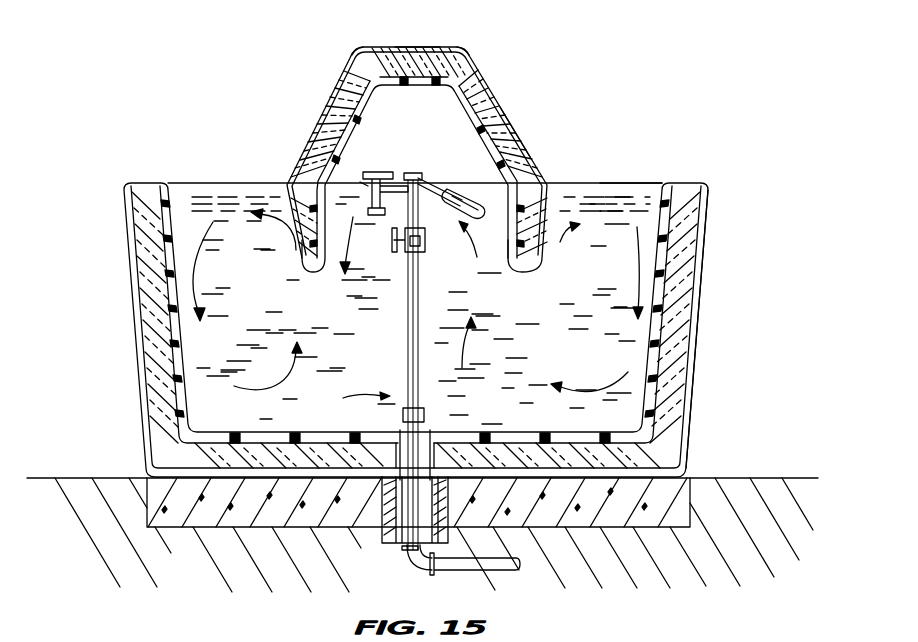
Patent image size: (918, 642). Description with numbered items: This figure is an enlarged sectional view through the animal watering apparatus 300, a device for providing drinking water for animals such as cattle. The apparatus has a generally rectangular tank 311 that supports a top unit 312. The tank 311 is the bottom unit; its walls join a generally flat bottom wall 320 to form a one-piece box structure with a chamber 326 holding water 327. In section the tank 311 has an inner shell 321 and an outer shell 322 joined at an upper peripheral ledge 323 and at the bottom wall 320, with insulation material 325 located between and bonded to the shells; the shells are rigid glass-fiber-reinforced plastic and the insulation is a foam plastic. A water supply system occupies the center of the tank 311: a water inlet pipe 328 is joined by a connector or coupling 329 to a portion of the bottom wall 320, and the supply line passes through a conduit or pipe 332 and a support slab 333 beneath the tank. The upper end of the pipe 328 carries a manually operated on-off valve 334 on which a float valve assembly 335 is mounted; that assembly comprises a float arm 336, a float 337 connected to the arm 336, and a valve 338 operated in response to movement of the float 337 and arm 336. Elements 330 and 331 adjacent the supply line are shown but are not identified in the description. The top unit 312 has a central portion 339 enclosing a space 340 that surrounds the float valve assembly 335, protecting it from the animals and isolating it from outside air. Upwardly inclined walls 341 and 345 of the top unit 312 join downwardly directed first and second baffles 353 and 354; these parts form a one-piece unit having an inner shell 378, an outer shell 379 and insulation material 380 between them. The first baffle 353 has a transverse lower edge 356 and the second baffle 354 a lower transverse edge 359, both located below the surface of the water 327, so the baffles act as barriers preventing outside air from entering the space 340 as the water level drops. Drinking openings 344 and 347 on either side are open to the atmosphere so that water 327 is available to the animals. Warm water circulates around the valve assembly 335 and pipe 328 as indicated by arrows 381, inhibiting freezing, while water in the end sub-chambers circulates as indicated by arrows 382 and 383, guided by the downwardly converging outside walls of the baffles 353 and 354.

The animal watering apparatus 300 is at (615, 71).
The tank 311 is at (698, 329).
The top unit 312 is at (402, 154).
The bottom wall 320 is at (392, 314).
The inner shell 321 is at (415, 303).
The outer shell 322 is at (128, 257).
The upper peripheral ledge 323 is at (143, 178).
The insulation material 325 is at (155, 287).
The chamber 326 is at (593, 289).
The water 327 is at (582, 218).
The water inlet pipe 328 is at (437, 358).
The connector or coupling 329 is at (426, 415).
The bottom passage 330 is at (432, 452).
The drain pipe 331 is at (487, 563).
The conduit or pipe 332 is at (382, 532).
The support slab 333 is at (182, 517).
The manually operated on-off valve 334 is at (424, 243).
The float valve assembly 335 is at (423, 170).
The float arm 336 is at (427, 186).
The float 337 is at (474, 193).
The float operated valve 338 is at (376, 172).
The central portion 339 is at (425, 46).
The space 340 is at (415, 109).
The upwardly inclined wall 341 is at (323, 112).
The drinking opening 344 is at (232, 192).
The upwardly inclined wall 345 is at (512, 112).
The drinking opening 347 is at (632, 202).
The first baffle 353 is at (300, 252).
The second baffle 354 is at (552, 248).
The transverse lower edge 356 is at (318, 272).
The lower transverse edge 359 is at (528, 268).
The inner shell 378 is at (357, 97).
The outer shell 379 is at (367, 47).
The insulation material 380 is at (463, 46).
The arrows 381 is at (336, 401).
The arrows 382 is at (278, 386).
The arrows 383 is at (545, 354).